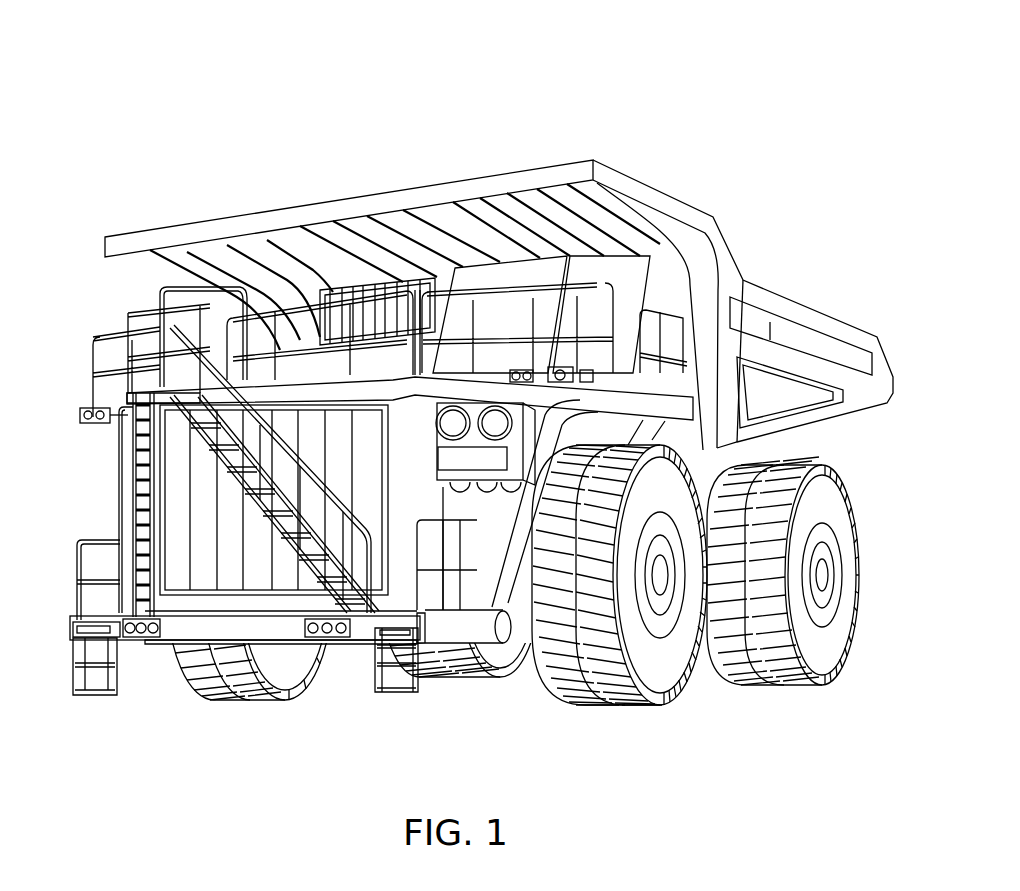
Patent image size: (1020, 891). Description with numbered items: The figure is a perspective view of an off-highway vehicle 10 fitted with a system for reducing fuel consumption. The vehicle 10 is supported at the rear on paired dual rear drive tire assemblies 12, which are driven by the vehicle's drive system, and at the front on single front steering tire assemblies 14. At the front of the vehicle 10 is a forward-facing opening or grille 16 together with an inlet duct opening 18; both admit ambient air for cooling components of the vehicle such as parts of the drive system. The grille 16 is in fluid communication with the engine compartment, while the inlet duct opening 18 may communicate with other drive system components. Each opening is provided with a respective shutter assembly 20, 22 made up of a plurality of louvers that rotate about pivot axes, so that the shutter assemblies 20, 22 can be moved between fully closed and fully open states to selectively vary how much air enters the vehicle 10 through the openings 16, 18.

The off-highway vehicle 10 is at (578, 98).
The paired dual rear drive tire assemblies 12 is at (737, 458).
The single front steering tire assemblies 14 is at (616, 706).
The forward-facing opening or grille 16 is at (203, 580).
The inlet duct opening 18 is at (410, 284).
The shutter assembly 20 is at (207, 493).
The shutter assembly 22 is at (368, 322).